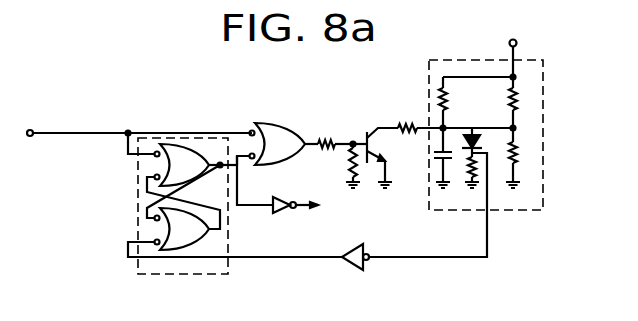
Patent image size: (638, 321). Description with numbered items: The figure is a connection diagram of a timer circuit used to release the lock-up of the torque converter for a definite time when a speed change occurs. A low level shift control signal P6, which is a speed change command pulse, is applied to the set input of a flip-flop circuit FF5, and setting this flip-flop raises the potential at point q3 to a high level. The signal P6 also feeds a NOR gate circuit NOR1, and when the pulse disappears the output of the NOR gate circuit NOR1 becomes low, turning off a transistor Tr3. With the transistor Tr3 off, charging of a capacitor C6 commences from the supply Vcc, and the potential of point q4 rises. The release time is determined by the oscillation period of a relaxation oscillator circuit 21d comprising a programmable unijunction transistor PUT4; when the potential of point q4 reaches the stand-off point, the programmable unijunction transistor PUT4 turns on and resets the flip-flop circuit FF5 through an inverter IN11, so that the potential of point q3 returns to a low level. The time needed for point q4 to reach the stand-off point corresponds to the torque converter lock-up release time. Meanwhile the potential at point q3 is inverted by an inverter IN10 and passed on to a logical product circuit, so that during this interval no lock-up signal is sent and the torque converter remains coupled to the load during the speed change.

The shift control signal P6 is at (29, 130).
The flip-flop circuit FF5 is at (163, 136).
The NOR gate circuit NOR1 is at (283, 122).
The point q3 is at (239, 161).
The inverter IN10 is at (280, 212).
The inverter IN11 is at (348, 263).
The transistor Tr3 is at (398, 158).
The point q4 is at (442, 127).
The capacitor C6 is at (435, 160).
The programmable unijunction transistor PUT4 is at (472, 134).
The supply voltage Vcc is at (518, 51).
The relaxation oscillator circuit 21d is at (547, 95).